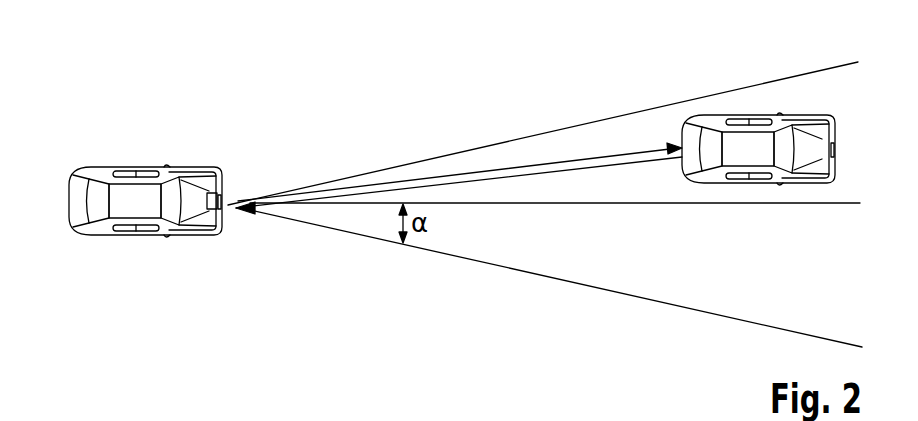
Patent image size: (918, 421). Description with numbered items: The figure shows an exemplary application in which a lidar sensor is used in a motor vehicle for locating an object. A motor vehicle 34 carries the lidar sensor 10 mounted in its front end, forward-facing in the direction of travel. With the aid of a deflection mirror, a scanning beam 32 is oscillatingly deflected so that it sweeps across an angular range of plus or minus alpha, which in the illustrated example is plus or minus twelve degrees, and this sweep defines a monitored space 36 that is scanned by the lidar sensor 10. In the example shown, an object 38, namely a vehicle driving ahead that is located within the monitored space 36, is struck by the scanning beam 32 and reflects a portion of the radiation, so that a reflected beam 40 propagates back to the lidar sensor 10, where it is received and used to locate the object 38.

The lidar sensor 10 is at (207, 203).
The scanning beam 32 is at (447, 175).
The motor vehicle 34 is at (133, 168).
The monitored space 36 is at (618, 115).
The object 38 is at (755, 115).
The reflected beam 40 is at (511, 178).